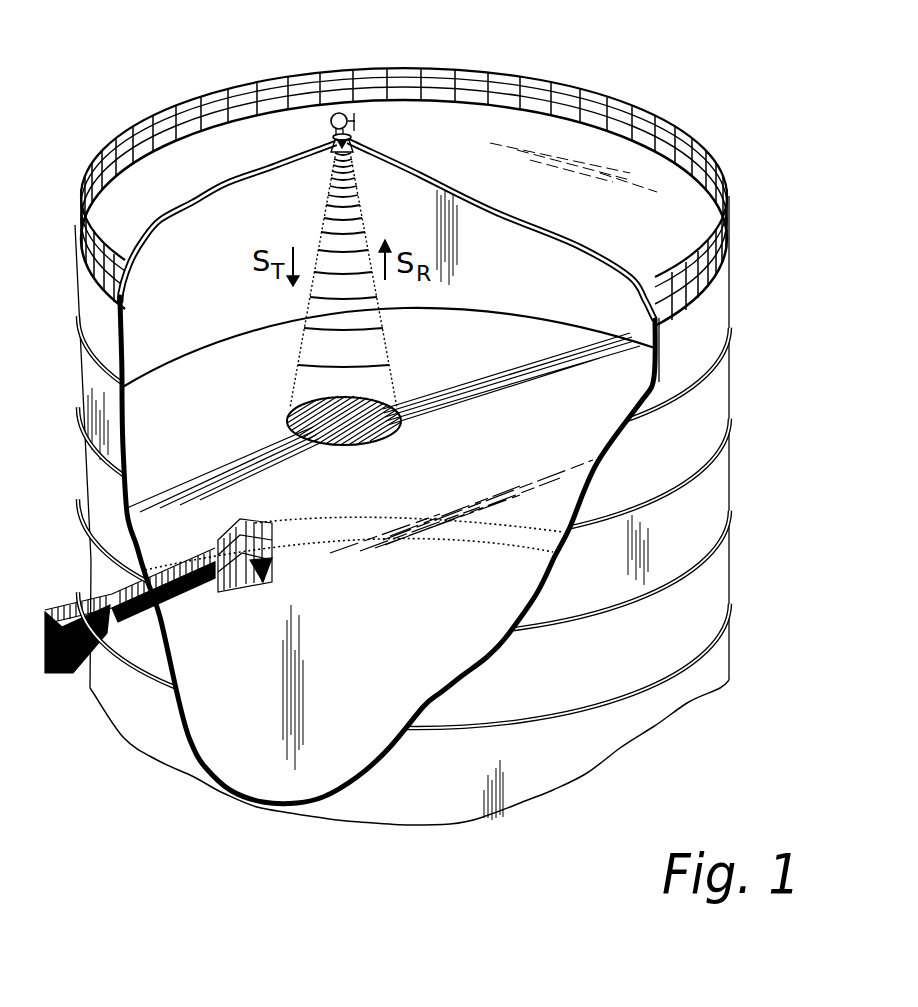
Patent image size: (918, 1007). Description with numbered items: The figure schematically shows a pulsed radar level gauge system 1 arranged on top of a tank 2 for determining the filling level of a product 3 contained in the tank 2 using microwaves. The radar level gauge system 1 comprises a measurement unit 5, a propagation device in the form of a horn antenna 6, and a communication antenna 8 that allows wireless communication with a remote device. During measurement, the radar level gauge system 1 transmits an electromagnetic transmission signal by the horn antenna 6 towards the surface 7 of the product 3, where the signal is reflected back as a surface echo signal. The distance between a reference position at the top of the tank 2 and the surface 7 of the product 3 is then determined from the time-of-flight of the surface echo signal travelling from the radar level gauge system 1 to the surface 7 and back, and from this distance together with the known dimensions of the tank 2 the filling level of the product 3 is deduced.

The level gauge system 1 is at (350, 107).
The tank 2 is at (705, 397).
The product 3 is at (345, 695).
The measurement unit 5 is at (295, 98).
The horn antenna 6 is at (332, 152).
The surface 7 is at (487, 585).
The communication antenna 8 is at (356, 124).